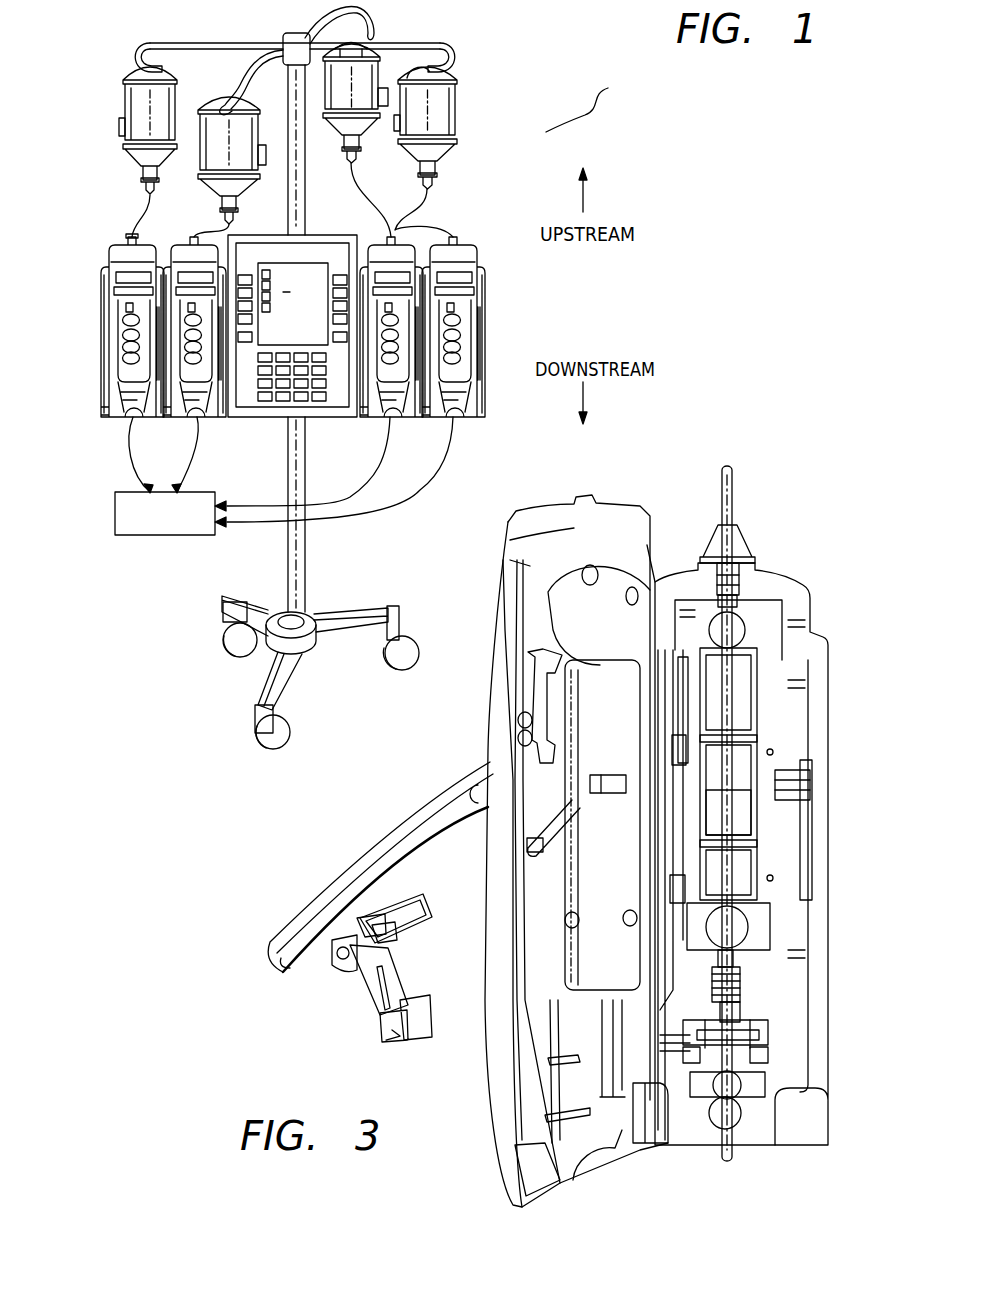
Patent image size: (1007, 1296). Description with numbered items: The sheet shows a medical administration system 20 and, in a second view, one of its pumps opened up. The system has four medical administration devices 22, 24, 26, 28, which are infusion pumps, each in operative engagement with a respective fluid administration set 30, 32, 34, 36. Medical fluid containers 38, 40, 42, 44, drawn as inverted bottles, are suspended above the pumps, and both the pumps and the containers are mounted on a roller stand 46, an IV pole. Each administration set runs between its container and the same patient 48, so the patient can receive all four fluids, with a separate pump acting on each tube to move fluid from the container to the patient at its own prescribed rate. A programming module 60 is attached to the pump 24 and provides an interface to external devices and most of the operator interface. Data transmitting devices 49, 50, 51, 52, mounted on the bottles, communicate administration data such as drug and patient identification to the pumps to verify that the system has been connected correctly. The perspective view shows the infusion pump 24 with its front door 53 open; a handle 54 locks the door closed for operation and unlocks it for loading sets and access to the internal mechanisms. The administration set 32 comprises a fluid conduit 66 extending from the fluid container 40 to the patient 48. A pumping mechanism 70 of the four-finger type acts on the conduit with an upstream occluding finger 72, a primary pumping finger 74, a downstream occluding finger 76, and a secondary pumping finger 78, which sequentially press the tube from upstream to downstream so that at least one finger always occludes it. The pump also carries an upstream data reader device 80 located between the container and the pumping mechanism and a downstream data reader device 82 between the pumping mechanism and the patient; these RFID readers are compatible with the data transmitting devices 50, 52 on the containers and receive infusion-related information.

In FIG. 1, the medical administration system 20 is at (587, 99).
In FIG. 1, the medical administration device 22 is at (488, 296).
In FIG. 1, the infusion pump 24 is at (455, 240).
In FIG. 3, the infusion pump 24 is at (800, 580).
In FIG. 1, the medical administration device 26 is at (130, 237).
In FIG. 1, the medical administration device 28 is at (100, 262).
In FIG. 1, the fluid administration set 30 is at (438, 212).
In FIG. 1, the fluid administration set 32 is at (382, 235).
In FIG. 3, the fluid administration set 32 is at (736, 481).
In FIG. 1, the fluid administration set 34 is at (212, 240).
In FIG. 1, the fluid administration set 36 is at (146, 212).
In FIG. 1, the fluid container 38 is at (456, 130).
In FIG. 1, the fluid container 40 is at (384, 38).
In FIG. 1, the fluid container 42 is at (218, 108).
In FIG. 1, the fluid container 44 is at (122, 112).
In FIG. 1, the roller stand 46 is at (306, 588).
In FIG. 1, the patient 48 is at (152, 537).
In FIG. 1, the data transmitting device 49 is at (390, 102).
In FIG. 1, the data transmitting device 50 is at (404, 84).
In FIG. 1, the data transmitting device 51 is at (119, 128).
In FIG. 1, the data transmitting device 52 is at (266, 166).
In FIG. 3, the front door 53 is at (562, 512).
In FIG. 3, the handle 54 is at (423, 807).
In FIG. 1, the programming module 60 is at (320, 235).
In FIG. 3, the fluid conduit 66 is at (750, 656).
In FIG. 3, the pumping mechanism 70 is at (770, 708).
In FIG. 3, the upstream occluding finger 72 is at (757, 738).
In FIG. 3, the primary pumping finger 74 is at (748, 787).
In FIG. 3, the downstream occluding finger 76 is at (748, 843).
In FIG. 3, the secondary pumping finger 78 is at (748, 884).
In FIG. 3, the upstream data reader device 80 is at (745, 623).
In FIG. 3, the downstream data reader device 82 is at (750, 1118).